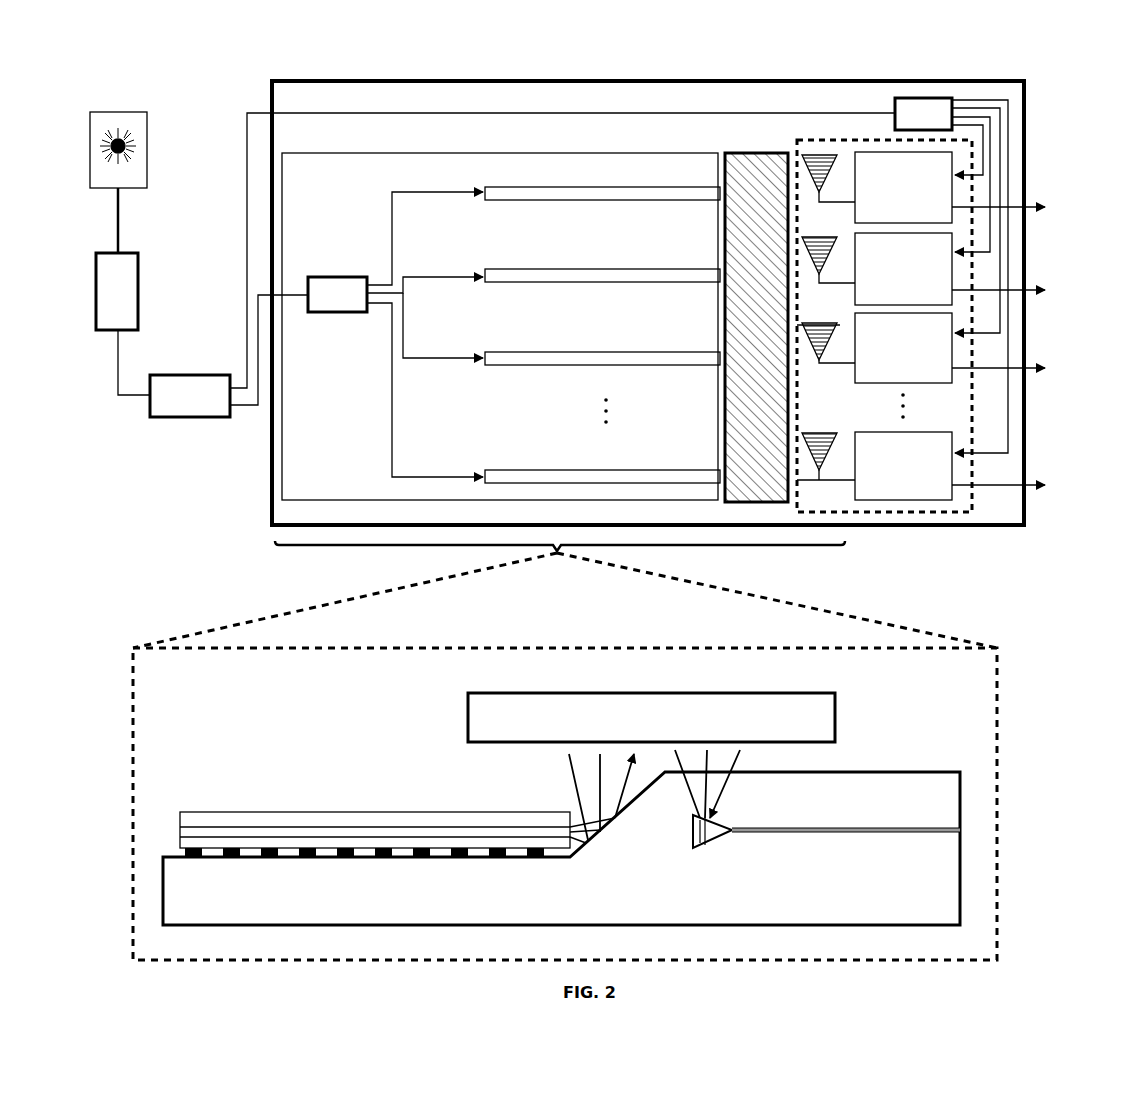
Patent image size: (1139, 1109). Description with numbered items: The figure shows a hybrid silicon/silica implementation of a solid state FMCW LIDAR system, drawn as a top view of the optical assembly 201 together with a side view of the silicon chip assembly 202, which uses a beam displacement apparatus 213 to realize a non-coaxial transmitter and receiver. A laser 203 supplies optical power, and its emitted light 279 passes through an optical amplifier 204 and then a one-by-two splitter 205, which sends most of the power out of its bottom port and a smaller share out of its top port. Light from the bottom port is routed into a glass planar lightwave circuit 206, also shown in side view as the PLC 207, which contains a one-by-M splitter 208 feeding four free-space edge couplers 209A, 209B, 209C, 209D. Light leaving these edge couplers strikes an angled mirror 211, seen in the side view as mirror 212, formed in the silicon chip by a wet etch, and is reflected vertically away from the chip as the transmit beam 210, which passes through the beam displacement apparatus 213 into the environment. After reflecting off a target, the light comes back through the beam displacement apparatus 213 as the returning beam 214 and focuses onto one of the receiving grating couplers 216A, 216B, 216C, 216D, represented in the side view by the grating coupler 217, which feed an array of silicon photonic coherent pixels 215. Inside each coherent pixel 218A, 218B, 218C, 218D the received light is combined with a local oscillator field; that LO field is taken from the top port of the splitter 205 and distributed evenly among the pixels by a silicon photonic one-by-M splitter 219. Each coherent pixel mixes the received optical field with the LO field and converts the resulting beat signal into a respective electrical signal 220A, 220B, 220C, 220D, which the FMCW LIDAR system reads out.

The optical assembly 201 is at (272, 519).
The silicon chip assembly 202 is at (215, 928).
The laser 203 is at (147, 146).
The optical amplifier 204 is at (138, 290).
The 1×2 splitter 205 is at (190, 417).
The planar lightwave circuit 206 is at (518, 152).
The planar lightwave circuit 207 is at (433, 808).
The 1×M splitter 208 is at (346, 312).
The free-space edge coupler 209A is at (604, 200).
The free-space edge coupler 209B is at (598, 283).
The free-space edge coupler 209C is at (584, 365).
The free-space edge coupler 209D is at (527, 470).
The transmit beam 210 is at (572, 785).
The angled mirror 211 is at (768, 153).
The angled mirror 212 is at (612, 830).
The beam displacement apparatus 213 is at (842, 723).
The returning beam 214 is at (732, 812).
The array of silicon photonic coherent pixels 215 is at (797, 512).
The grating coupler 216A is at (822, 155).
The grating coupler 216B is at (807, 237).
The grating coupler 216C is at (807, 318).
The grating coupler 216D is at (820, 433).
The receiving grating coupler 217 is at (710, 848).
The coherent pixel 218A is at (903, 187).
The coherent pixel 218B is at (903, 269).
The coherent pixel 218C is at (903, 348).
The coherent pixel 218D is at (903, 466).
The silicon photonic 1×M splitter 219 is at (895, 110).
The electrical signal 220A is at (1033, 210).
The electrical signal 220B is at (1033, 293).
The electrical signal 220C is at (1033, 371).
The electrical signal 220D is at (1033, 488).
The light 279 is at (118, 223).